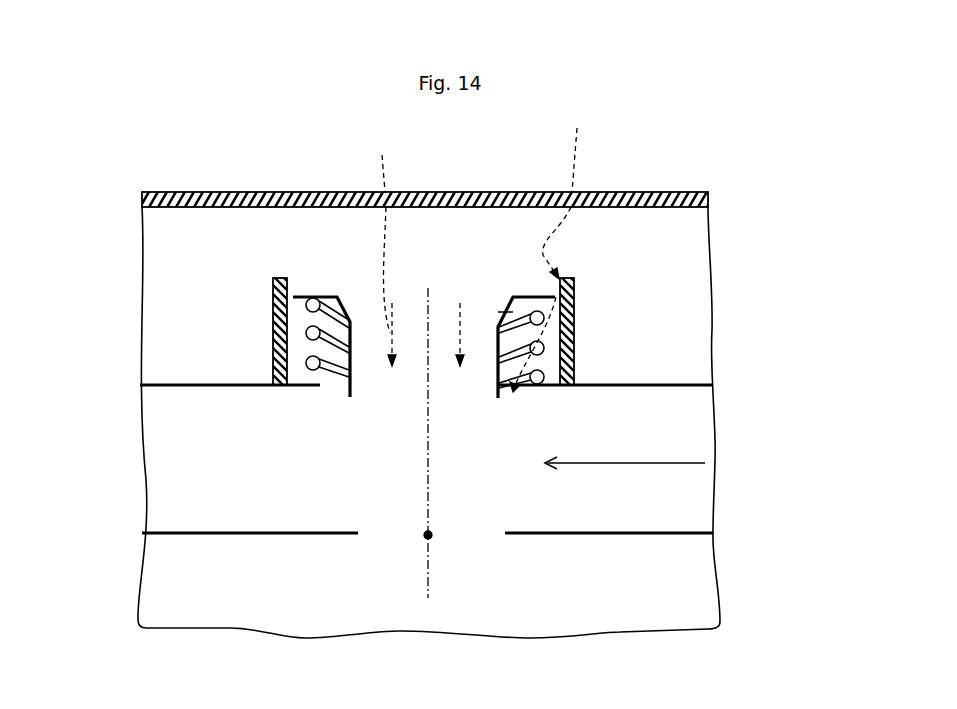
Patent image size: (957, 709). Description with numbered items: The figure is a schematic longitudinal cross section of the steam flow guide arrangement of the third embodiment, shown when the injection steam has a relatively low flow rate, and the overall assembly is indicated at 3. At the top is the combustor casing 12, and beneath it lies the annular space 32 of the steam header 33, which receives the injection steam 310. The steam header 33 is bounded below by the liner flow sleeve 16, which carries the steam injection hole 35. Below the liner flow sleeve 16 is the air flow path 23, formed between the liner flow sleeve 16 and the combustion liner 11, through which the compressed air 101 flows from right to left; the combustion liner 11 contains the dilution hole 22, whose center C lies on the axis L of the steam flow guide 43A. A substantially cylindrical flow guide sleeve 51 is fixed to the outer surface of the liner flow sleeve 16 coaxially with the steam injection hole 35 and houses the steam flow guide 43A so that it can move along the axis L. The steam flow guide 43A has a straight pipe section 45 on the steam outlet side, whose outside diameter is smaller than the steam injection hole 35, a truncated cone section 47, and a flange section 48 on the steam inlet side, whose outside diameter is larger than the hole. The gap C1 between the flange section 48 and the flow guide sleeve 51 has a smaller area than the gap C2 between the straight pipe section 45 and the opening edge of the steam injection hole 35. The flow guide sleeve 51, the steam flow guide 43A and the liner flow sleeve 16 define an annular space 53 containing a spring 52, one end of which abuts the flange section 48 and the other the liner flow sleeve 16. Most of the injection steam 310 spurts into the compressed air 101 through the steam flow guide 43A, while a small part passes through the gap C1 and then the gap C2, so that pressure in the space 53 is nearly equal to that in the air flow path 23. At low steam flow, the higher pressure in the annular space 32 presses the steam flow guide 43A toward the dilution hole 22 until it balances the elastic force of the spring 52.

The blower unit 3 is at (720, 168).
The combustion liner 11 is at (685, 533).
The combustor casing 12 is at (605, 192).
The liner flow sleeve 16 is at (693, 383).
The dilution hole 22 is at (358, 533).
The air flow path 23 is at (221, 473).
The annular space 32 is at (625, 258).
The steam header 33 is at (418, 187).
The steam injection hole 35 is at (320, 385).
The steam flow guide 43A is at (535, 290).
The straight pipe section 45 is at (497, 337).
The truncated cone section 47 is at (512, 300).
The flange section 48 is at (521, 293).
The flow guide sleeve 51 is at (272, 293).
The spring 52 is at (312, 363).
The annular space 53 is at (290, 342).
The compressed air 101 is at (659, 463).
The injection steam 310 is at (479, 248).
The axis L is at (430, 598).
The center C is at (428, 535).
The gap C1 is at (293, 295).
The gap C2 is at (333, 400).